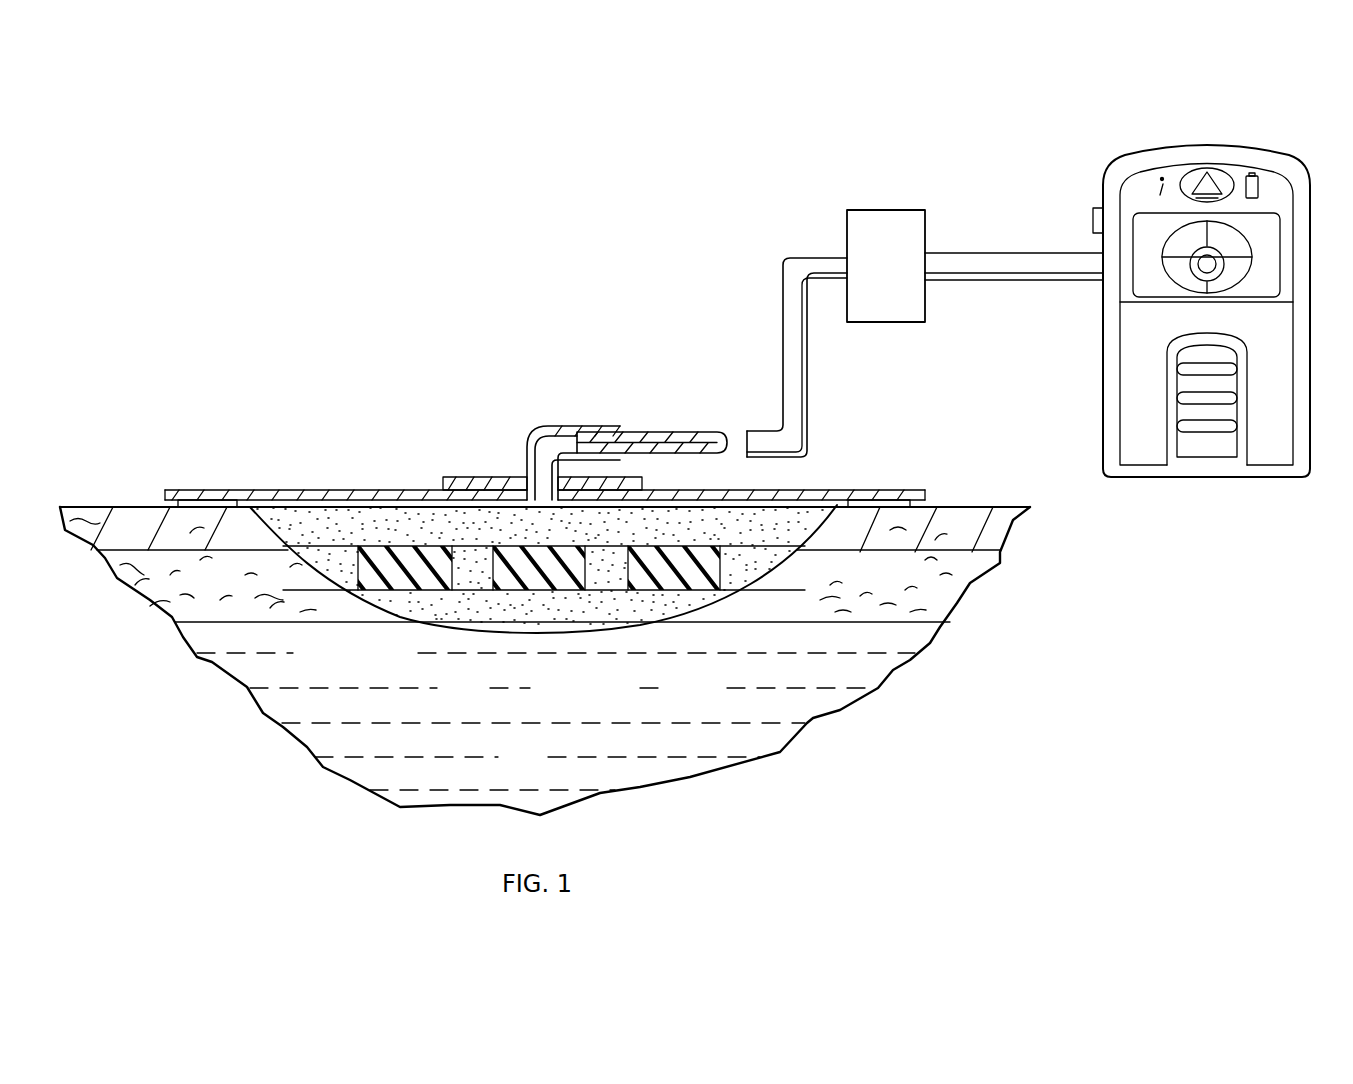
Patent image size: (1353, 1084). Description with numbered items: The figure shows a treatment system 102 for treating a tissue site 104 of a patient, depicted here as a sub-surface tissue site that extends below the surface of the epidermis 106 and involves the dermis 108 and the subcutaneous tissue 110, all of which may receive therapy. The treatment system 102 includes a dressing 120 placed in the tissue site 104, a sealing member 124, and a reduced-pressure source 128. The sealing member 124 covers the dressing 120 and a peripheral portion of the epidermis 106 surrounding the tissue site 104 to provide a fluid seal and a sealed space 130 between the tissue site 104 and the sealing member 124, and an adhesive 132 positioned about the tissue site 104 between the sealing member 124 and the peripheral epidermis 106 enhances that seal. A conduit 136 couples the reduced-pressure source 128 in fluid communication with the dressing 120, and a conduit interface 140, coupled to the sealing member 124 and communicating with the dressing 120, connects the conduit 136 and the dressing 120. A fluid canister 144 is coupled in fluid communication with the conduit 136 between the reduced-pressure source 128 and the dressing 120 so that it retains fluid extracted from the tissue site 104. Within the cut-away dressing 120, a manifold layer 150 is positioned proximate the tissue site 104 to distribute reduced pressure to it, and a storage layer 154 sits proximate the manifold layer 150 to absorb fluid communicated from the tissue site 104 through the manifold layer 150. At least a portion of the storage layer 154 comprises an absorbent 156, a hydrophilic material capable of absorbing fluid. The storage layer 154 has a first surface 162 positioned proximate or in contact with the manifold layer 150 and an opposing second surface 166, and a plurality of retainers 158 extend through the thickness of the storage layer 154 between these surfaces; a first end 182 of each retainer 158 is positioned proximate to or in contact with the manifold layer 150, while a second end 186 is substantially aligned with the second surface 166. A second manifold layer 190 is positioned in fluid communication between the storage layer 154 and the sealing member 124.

The treatment system 102 is at (493, 240).
The tissue site 104 is at (910, 705).
The epidermis 106 is at (1027, 513).
The dermis 108 is at (957, 603).
The subcutaneous tissue 110 is at (503, 769).
The dressing 120 is at (287, 490).
The sealing member 124 is at (890, 498).
The reduced-pressure source 128 is at (1237, 147).
The sealed space 130 is at (253, 502).
The adhesive 132 is at (178, 503).
The conduit 136 is at (783, 354).
The conduit interface 140 is at (547, 426).
The fluid canister 144 is at (846, 233).
The manifold layer 150 is at (790, 742).
The storage layer 154 is at (768, 592).
The absorbent 156 is at (425, 560).
The retainers 158 is at (340, 603).
The first surface 162 is at (402, 590).
The second surface 166 is at (380, 545).
The first end 182 is at (345, 590).
The second end 186 is at (341, 543).
The second manifold layer 190 is at (727, 516).